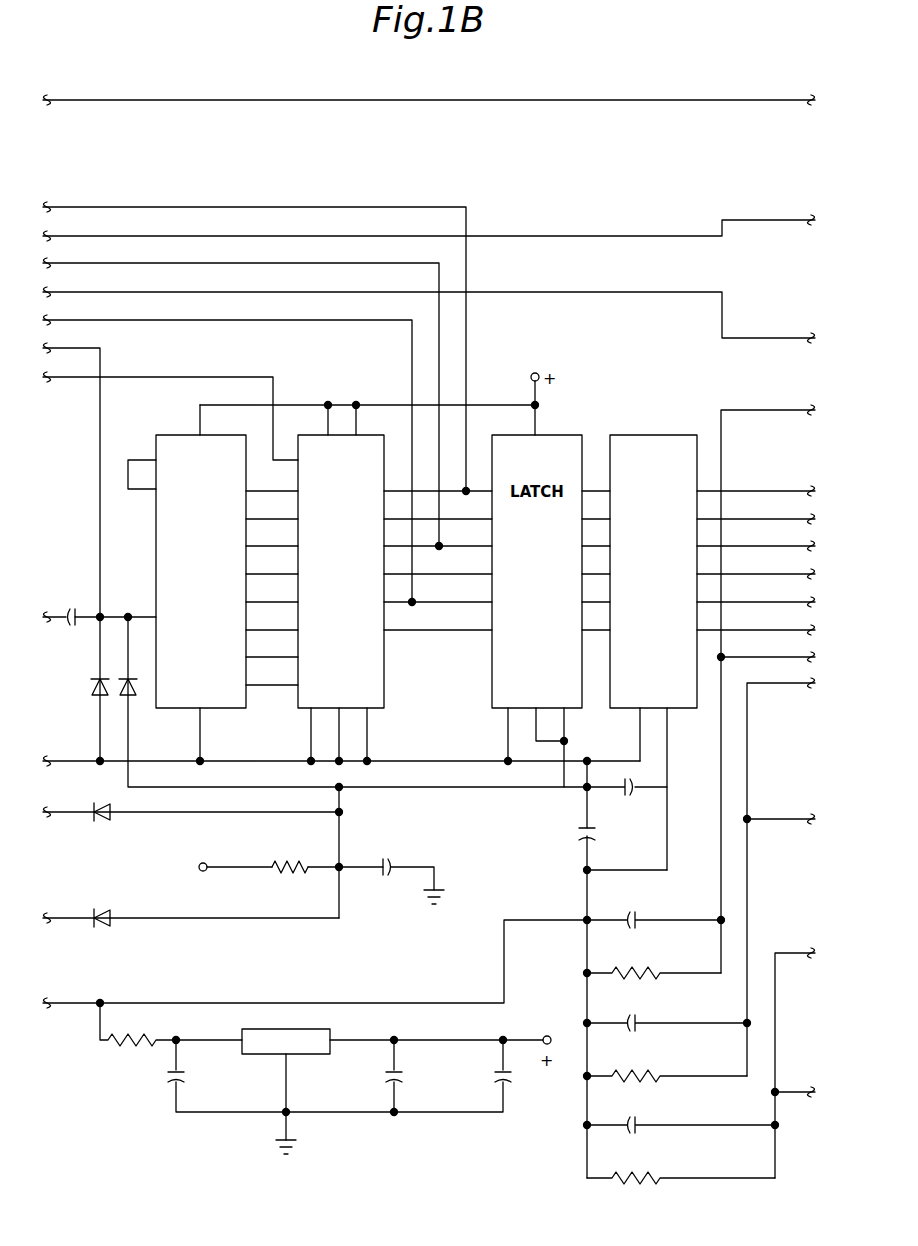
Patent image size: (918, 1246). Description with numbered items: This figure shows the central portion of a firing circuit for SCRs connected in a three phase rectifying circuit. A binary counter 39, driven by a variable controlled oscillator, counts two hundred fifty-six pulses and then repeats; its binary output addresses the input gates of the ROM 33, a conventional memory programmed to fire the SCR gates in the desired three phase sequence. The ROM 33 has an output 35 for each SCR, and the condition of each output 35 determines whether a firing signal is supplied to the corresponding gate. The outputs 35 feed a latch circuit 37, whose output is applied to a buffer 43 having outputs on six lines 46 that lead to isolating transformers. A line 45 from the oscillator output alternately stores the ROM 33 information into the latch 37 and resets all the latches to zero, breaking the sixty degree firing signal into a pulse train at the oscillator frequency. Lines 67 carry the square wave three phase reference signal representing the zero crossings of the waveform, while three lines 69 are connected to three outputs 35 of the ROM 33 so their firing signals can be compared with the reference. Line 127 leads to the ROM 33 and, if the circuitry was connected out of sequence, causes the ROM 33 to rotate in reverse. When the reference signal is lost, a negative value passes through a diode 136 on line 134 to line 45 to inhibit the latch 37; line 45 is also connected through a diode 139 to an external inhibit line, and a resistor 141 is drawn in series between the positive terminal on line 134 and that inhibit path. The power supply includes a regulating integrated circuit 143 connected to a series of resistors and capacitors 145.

The lines 67 is at (418, 100).
The lines 69 is at (466, 360).
The line 127 is at (140, 377).
The binary counter 39 is at (247, 696).
The ROM 33 is at (384, 707).
The outputs 35 is at (384, 632).
The latch circuit 37 is at (492, 640).
The buffer 43 is at (630, 712).
The lines 46 is at (755, 490).
The line 45 is at (456, 787).
The diode 136 is at (114, 814).
The diode 139 is at (110, 918).
The line 134 is at (197, 812).
The resistor 141 is at (300, 862).
The power supply regulating integrated circuit 143 is at (266, 1056).
The series of resistors and capacitors 145 is at (576, 988).